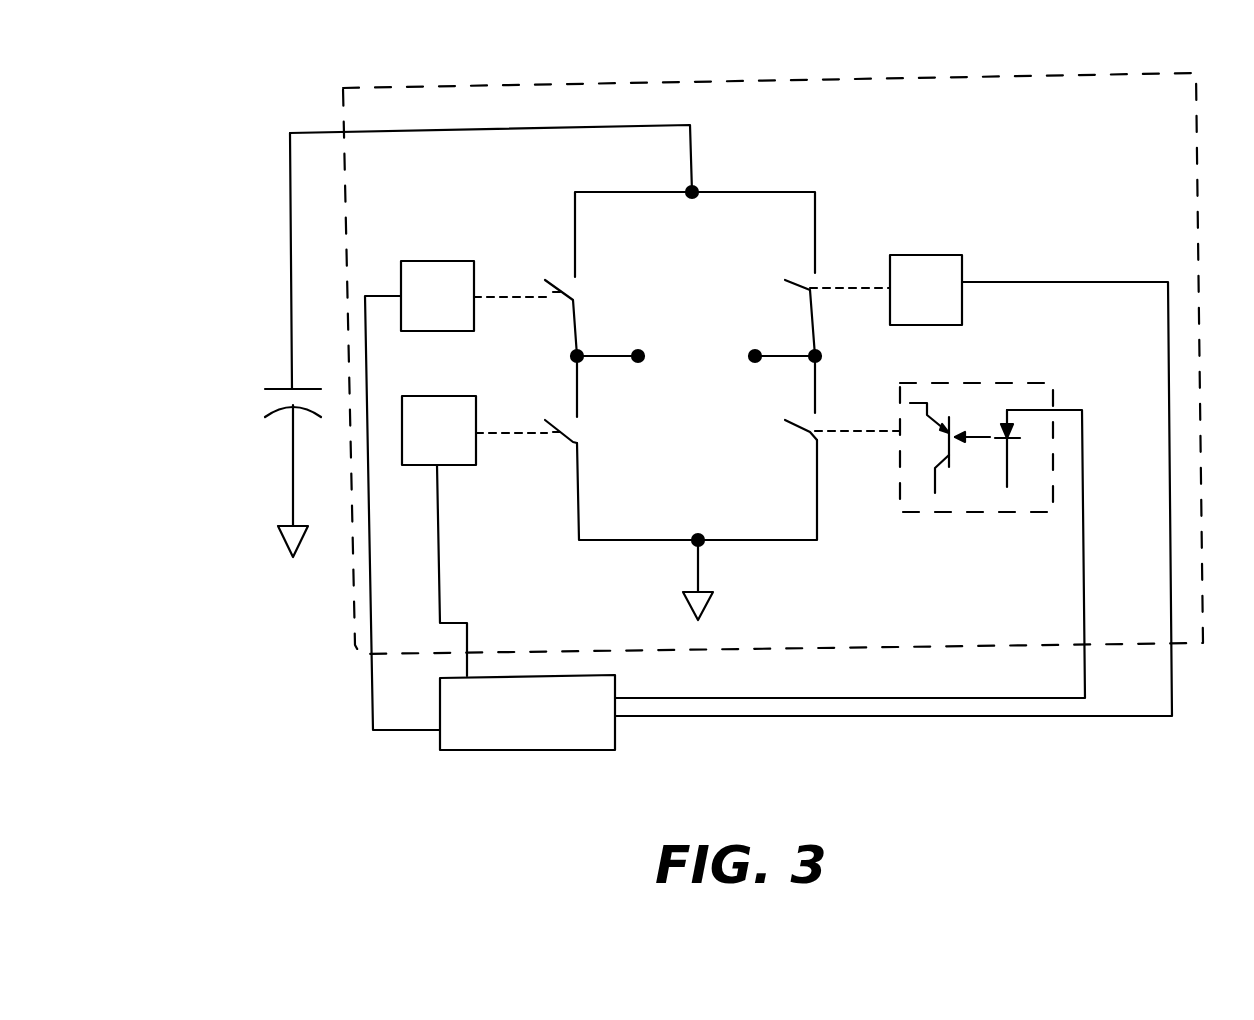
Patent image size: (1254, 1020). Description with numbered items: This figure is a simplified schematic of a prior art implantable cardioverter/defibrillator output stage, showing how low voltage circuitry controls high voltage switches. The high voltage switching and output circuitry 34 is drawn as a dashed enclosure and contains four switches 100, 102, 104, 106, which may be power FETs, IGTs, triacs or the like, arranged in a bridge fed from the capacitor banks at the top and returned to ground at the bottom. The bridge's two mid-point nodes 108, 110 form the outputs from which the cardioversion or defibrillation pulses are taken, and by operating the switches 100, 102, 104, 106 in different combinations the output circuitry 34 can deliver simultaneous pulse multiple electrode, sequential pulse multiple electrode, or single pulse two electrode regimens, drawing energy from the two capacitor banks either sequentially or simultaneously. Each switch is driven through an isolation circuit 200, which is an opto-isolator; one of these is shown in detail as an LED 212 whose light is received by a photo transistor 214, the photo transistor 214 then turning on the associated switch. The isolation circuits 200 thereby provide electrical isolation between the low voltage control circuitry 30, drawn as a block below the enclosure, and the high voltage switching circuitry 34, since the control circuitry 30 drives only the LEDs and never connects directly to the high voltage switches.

The output circuitry 34 is at (962, 78).
The isolation circuits 200 is at (455, 262).
The switch 100 is at (585, 282).
The switch 102 is at (790, 294).
The switch 104 is at (585, 428).
The switch 106 is at (790, 442).
The first bridge output node 108 is at (638, 350).
The second bridge output node 110 is at (755, 362).
The LED 212 is at (1005, 462).
The photo transistor 214 is at (945, 447).
The low voltage control circuitry 30 is at (547, 698).